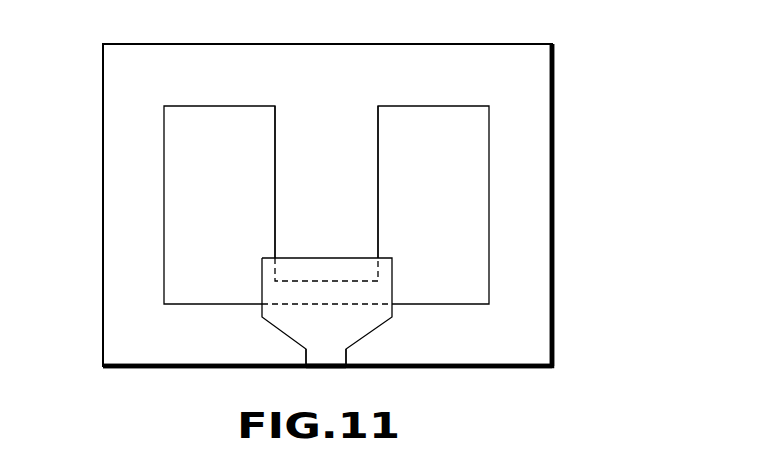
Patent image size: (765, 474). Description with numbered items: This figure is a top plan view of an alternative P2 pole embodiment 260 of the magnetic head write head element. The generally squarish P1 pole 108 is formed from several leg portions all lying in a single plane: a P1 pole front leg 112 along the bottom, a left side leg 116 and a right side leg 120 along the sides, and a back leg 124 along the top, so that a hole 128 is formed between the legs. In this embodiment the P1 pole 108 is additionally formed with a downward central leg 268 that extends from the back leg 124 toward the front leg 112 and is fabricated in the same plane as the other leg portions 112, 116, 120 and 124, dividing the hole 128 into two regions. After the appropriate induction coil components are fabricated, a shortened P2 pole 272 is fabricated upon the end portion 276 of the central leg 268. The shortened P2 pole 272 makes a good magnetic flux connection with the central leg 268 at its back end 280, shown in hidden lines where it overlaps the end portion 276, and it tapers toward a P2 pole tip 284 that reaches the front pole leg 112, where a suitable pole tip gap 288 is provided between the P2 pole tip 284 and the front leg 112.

The alternative P2 pole embodiment 260 is at (593, 47).
The P1 pole 108 is at (540, 128).
The P1 pole front leg 112 is at (483, 350).
The left side leg 116 is at (117, 120).
The right side leg 120 is at (542, 253).
The back leg 124 is at (290, 62).
The hole 128 is at (178, 244).
The central leg 268 is at (292, 155).
The shortened P2 pole 272 is at (280, 292).
The end portion 276 is at (308, 265).
The back end 280 is at (356, 270).
The P2 pole tip 284 is at (317, 355).
The pole tip gap 288 is at (336, 378).